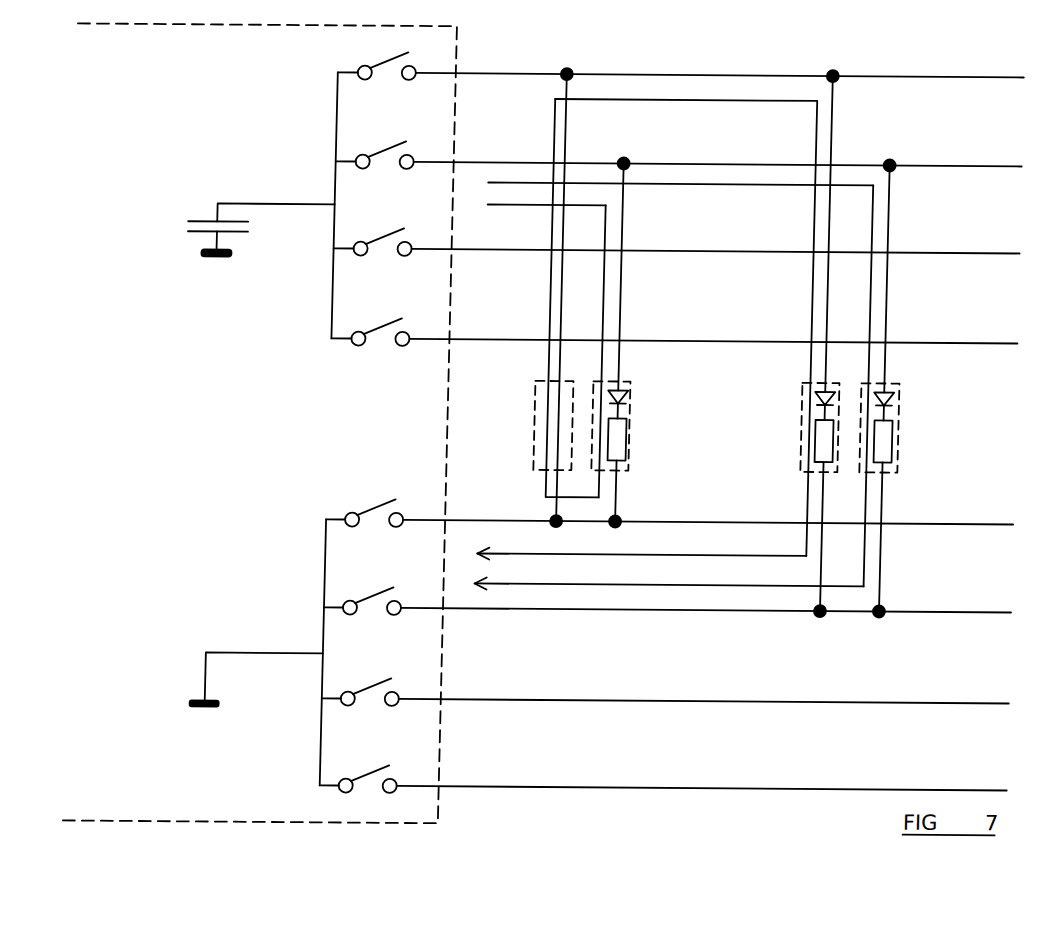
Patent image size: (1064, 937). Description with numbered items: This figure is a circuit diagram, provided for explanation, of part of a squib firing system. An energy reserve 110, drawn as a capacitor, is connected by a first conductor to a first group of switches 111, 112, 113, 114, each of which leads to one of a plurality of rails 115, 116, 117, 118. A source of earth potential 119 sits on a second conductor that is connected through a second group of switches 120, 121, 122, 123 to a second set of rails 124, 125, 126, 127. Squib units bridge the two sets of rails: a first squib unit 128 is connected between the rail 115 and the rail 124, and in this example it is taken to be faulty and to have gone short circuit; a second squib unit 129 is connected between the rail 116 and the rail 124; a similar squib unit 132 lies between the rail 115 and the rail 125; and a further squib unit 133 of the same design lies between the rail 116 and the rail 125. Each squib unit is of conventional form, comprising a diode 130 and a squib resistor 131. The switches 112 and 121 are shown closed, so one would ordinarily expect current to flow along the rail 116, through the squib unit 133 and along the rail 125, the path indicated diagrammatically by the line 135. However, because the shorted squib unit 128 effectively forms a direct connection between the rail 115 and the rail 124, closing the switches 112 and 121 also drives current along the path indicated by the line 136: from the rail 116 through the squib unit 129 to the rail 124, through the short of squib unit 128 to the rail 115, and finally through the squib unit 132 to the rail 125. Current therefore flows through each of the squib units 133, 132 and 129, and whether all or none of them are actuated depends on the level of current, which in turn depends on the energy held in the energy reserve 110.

The energy reserve 110 is at (172, 211).
The switch 111 is at (377, 63).
The switch 112 is at (381, 159).
The switch 113 is at (384, 238).
The switch 114 is at (381, 327).
The rail 115 is at (496, 73).
The rail 116 is at (500, 162).
The rail 117 is at (492, 250).
The rail 118 is at (475, 340).
The source of earth potential 119 is at (212, 668).
The switch 120 is at (376, 508).
The switch 121 is at (380, 606).
The switch 122 is at (380, 681).
The switch 123 is at (382, 774).
The rail 124 is at (941, 521).
The rail 125 is at (946, 609).
The rail 126 is at (925, 700).
The rail 127 is at (932, 787).
The first squib unit 128 is at (535, 415).
The second squib unit 129 is at (631, 420).
The diode 130 is at (628, 396).
The squib resistor 131 is at (628, 440).
The squib unit 132 is at (802, 405).
The squib unit 133 is at (899, 446).
The line 135 is at (868, 223).
The line 136 is at (573, 205).